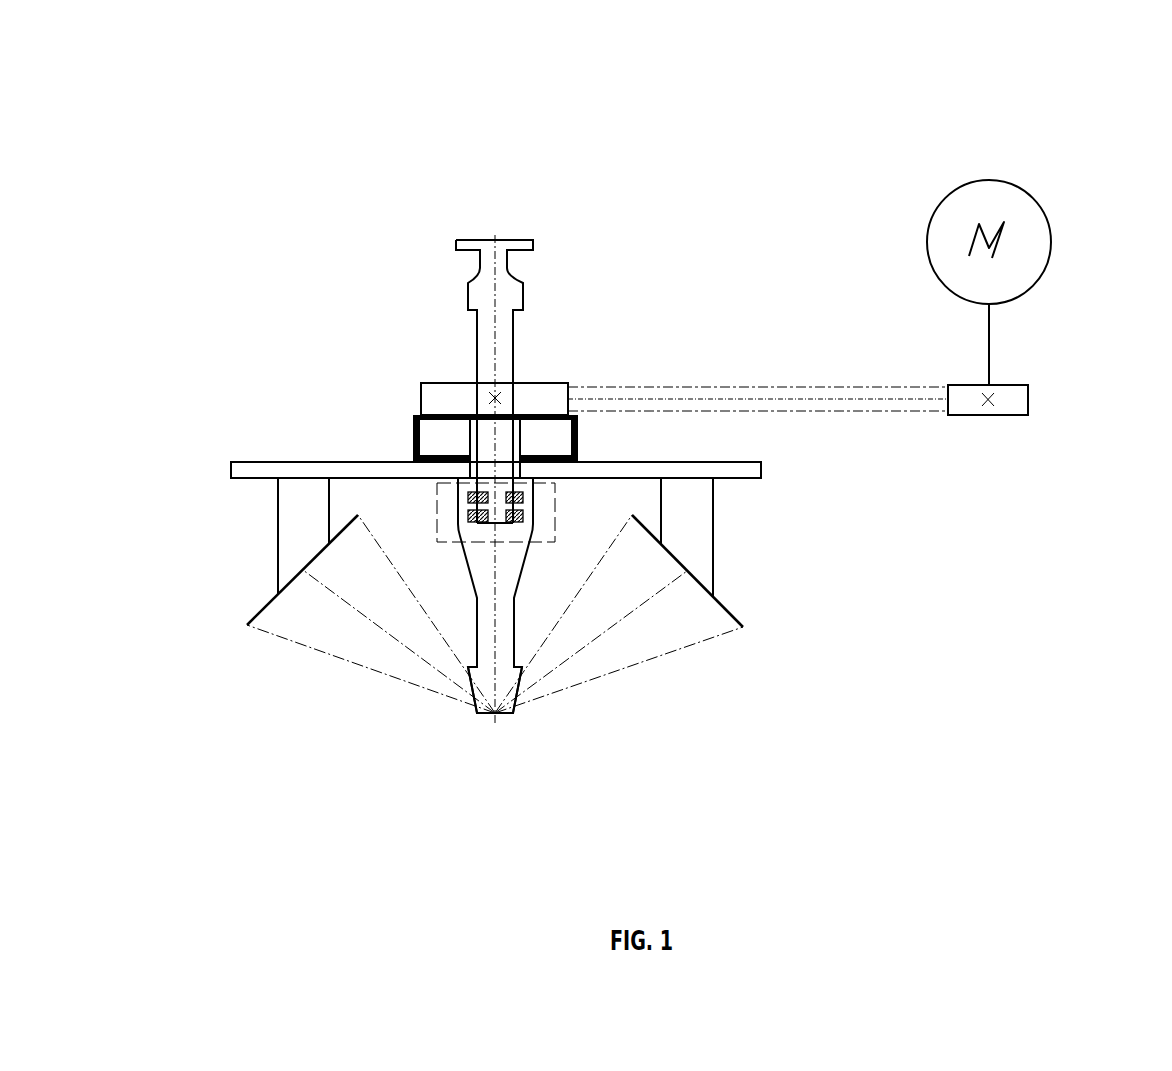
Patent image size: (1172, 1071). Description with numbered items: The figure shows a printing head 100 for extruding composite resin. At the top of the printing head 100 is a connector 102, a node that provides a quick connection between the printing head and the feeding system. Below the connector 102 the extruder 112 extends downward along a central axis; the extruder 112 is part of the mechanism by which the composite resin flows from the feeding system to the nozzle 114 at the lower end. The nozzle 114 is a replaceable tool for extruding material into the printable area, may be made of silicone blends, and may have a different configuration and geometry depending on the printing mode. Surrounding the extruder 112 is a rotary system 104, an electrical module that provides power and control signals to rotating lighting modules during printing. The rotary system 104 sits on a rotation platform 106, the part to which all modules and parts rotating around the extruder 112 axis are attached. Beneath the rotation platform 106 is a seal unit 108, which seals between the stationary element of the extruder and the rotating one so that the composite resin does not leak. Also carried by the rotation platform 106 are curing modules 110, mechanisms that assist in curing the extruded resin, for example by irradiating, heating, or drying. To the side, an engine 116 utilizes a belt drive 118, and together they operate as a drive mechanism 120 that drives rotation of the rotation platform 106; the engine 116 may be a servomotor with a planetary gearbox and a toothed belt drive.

The printing head 100 is at (840, 96).
The connector 102 is at (486, 280).
The rotary system 104 is at (443, 438).
The rotation platform 106 is at (345, 470).
The seal unit 108 is at (432, 493).
The curing module 110 is at (697, 582).
The extruder 112 is at (497, 602).
The nozzle 114 is at (486, 679).
The engine 116 is at (1027, 255).
The belt drive 118 is at (767, 377).
The drive mechanism 120 is at (1010, 399).